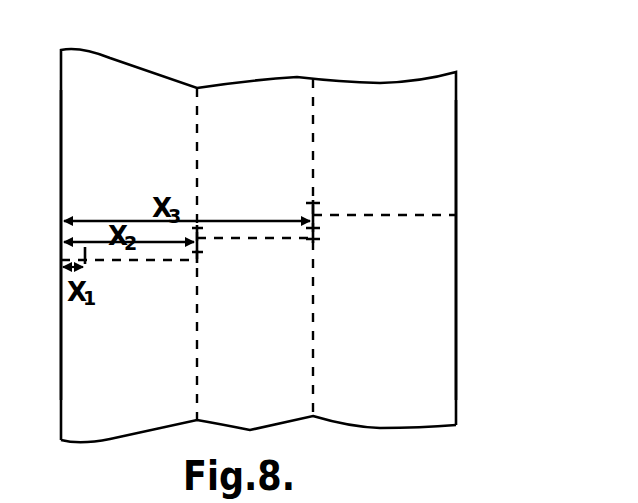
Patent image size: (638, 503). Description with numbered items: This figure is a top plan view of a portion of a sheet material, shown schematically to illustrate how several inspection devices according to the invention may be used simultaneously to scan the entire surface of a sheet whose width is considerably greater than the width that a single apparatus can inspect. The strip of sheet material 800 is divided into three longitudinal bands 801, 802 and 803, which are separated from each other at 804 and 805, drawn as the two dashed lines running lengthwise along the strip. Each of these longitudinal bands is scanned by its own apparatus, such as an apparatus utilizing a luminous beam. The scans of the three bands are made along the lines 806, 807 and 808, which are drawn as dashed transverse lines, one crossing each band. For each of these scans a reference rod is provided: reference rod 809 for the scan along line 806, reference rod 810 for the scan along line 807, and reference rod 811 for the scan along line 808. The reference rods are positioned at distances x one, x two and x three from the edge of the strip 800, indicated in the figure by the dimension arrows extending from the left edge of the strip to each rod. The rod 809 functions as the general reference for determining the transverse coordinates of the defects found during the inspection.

The strip of sheet material 800 is at (530, 70).
The longitudinal band 801 is at (128, 98).
The longitudinal band 802 is at (282, 100).
The longitudinal band 803 is at (413, 98).
The band separation 804 is at (198, 127).
The band separation 805 is at (314, 127).
The scan line 806 is at (146, 262).
The scan line 807 is at (263, 240).
The scan line 808 is at (395, 217).
The reference rod 809 is at (86, 265).
The reference rod 810 is at (200, 238).
The reference rod 811 is at (316, 216).